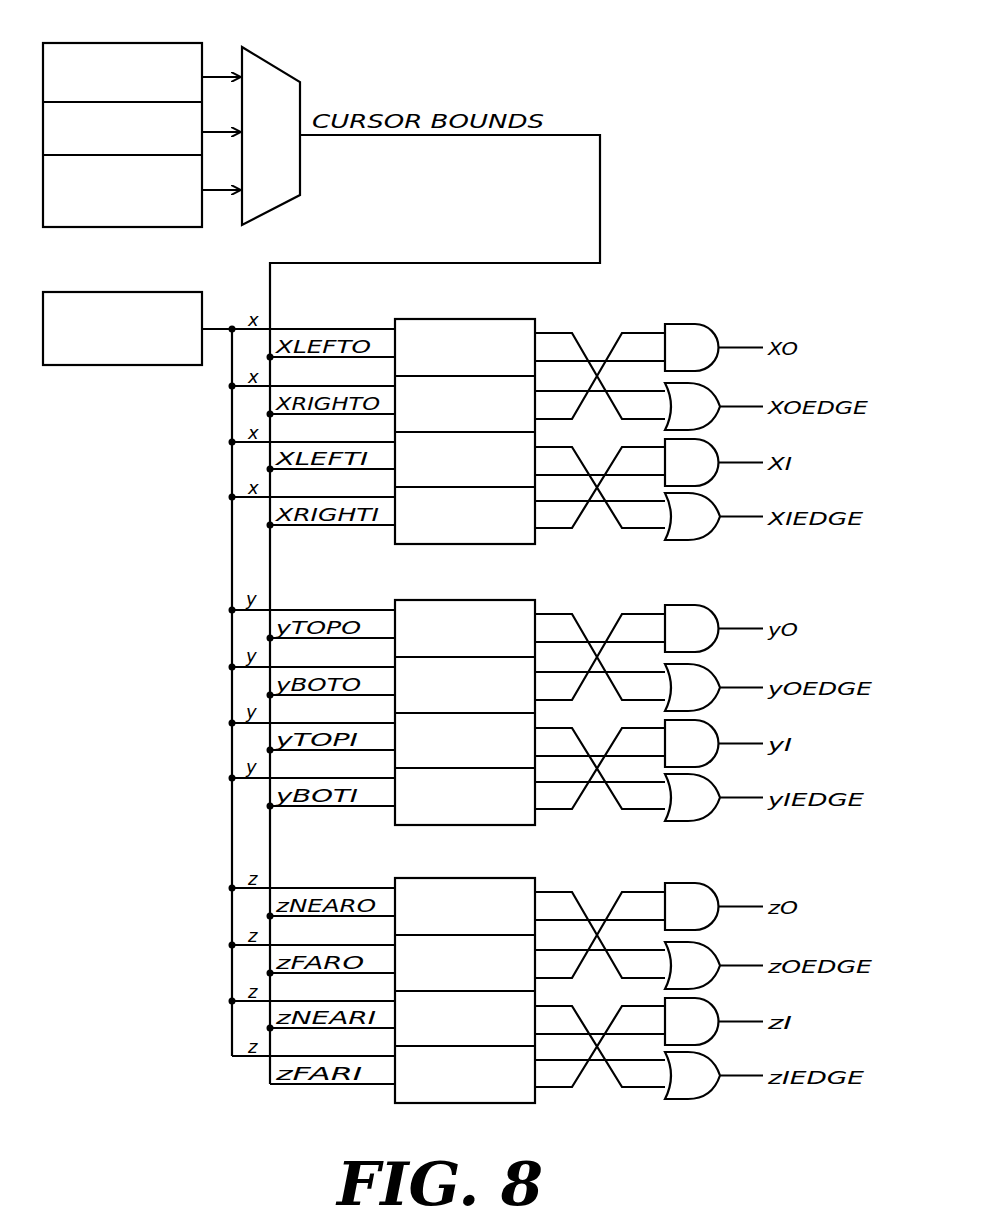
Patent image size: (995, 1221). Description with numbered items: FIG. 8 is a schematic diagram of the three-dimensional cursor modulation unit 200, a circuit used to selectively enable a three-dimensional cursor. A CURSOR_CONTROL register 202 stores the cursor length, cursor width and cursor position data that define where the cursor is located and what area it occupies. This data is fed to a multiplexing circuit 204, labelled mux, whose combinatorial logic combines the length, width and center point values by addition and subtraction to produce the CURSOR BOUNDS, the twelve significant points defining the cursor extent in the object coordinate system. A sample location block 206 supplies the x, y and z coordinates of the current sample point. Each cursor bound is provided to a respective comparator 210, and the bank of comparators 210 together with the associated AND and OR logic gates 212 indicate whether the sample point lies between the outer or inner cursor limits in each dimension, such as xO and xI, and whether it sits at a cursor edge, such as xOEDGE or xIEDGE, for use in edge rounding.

The 3-D cursor modulation unit 200 is at (142, 582).
The CURSOR_CONTROL register 202 is at (131, 228).
The multiplexing circuit 204 is at (282, 68).
The sample location register 206 is at (116, 292).
The comparator 210 is at (465, 693).
The logic gates 212 is at (714, 693).